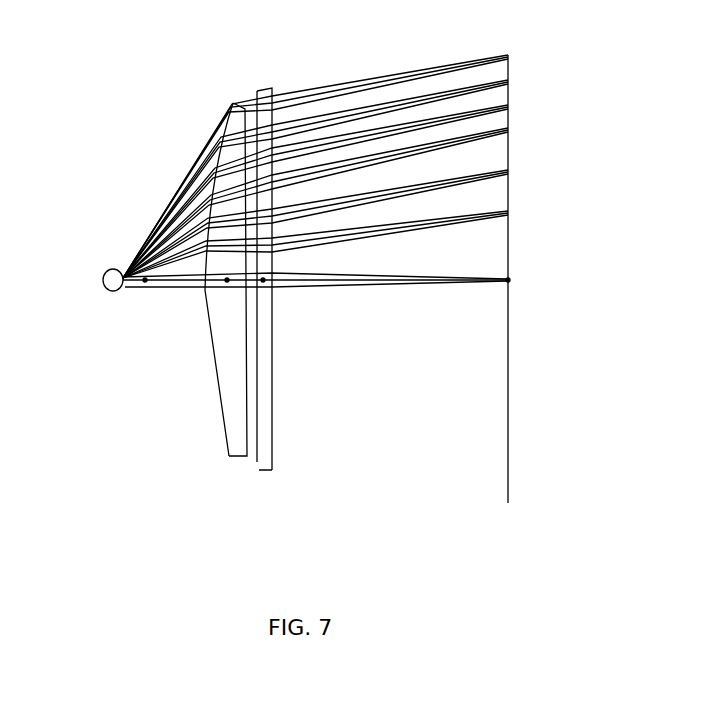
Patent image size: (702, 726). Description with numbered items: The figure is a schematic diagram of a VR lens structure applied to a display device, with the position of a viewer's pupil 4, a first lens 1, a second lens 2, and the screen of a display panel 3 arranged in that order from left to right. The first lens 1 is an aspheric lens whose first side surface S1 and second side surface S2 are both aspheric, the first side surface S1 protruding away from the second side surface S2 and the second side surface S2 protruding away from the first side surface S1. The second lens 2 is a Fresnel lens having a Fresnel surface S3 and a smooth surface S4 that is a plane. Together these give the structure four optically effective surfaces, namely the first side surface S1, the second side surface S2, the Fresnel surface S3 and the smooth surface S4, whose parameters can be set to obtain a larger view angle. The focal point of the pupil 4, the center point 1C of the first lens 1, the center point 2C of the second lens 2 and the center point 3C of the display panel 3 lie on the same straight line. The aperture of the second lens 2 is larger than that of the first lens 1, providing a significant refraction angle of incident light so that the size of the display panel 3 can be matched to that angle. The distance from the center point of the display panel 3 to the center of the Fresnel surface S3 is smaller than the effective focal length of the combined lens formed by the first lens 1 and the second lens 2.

The first lens 1 is at (165, 300).
The second lens 2 is at (261, 341).
The display panel 3 is at (507, 470).
The pupil 4 is at (106, 289).
The center point of the first lens 1C is at (204, 297).
The center point of the second lens 2C is at (264, 283).
The center point of the display panel 3C is at (510, 281).
The first side surface S1 is at (203, 279).
The second side surface S2 is at (234, 279).
The Fresnel surface S3 is at (282, 279).
The smooth surface S4 is at (243, 293).